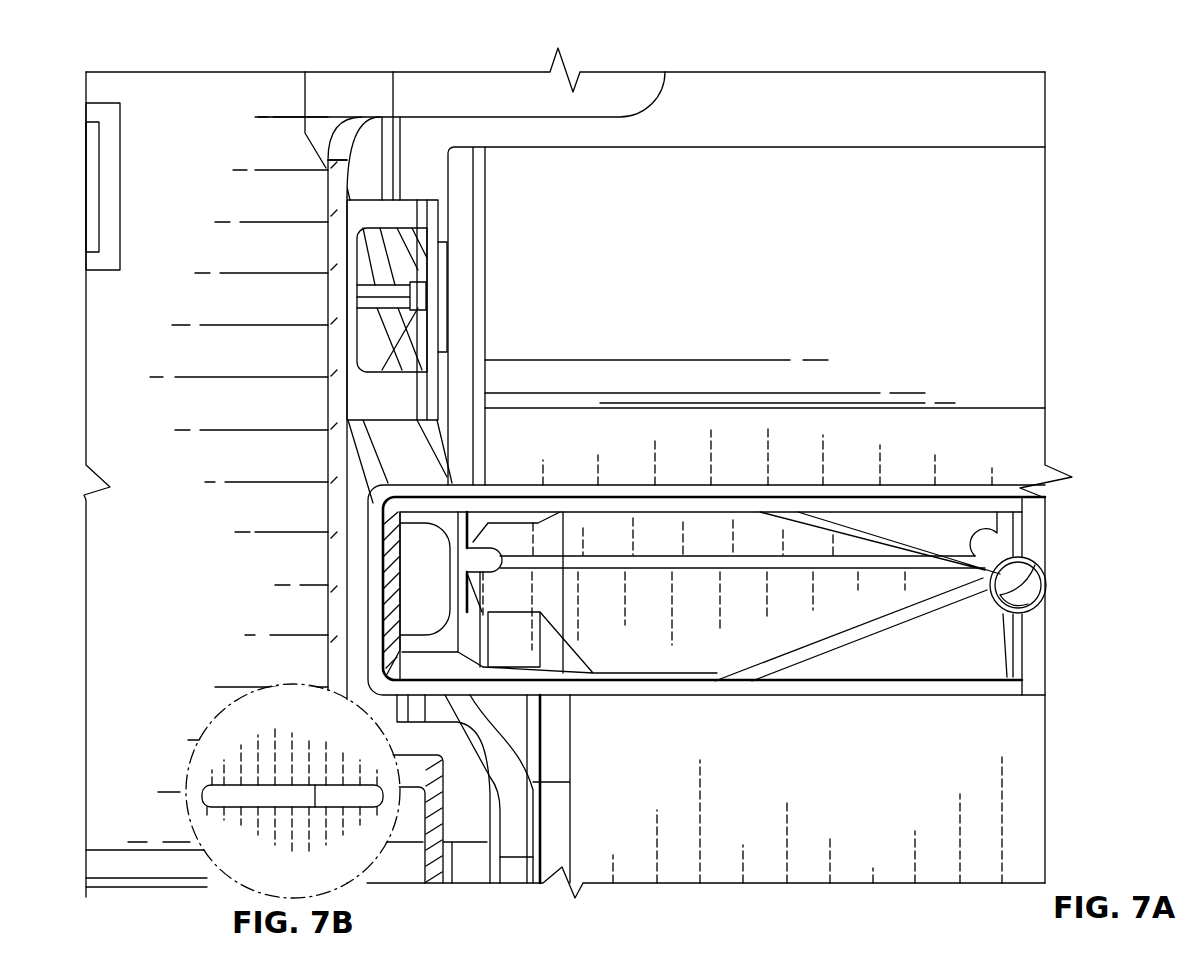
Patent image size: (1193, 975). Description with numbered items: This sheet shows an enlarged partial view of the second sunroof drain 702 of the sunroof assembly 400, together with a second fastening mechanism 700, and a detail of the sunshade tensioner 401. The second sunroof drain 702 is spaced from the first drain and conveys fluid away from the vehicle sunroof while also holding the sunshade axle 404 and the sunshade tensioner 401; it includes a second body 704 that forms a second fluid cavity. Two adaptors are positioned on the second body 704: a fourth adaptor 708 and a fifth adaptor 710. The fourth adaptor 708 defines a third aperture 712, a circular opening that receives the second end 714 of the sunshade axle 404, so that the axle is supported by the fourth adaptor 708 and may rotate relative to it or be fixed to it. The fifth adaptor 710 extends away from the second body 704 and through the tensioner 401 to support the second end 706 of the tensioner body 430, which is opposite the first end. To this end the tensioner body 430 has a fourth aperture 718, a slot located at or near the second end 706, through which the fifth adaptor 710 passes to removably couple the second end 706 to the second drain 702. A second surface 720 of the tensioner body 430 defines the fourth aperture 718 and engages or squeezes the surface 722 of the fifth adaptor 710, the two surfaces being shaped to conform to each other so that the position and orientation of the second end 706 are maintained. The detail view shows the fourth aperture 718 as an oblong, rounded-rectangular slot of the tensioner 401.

In FIG. 7A, the sunroof assembly 400 is at (83, 73).
In FIG. 7A, the sunshade tensioner 401 is at (876, 695).
In FIG. 7B, the sunshade tensioner 401 is at (293, 878).
In FIG. 7A, the sunshade axle 404 is at (417, 281).
In FIG. 7A, the tensioner body 430 is at (665, 666).
In FIG. 7A, the second fastening mechanism 700 is at (304, 524).
In FIG. 7A, the second sunroof drain 702 is at (356, 160).
In FIG. 7A, the second body 704 is at (113, 348).
In FIG. 7A, the second end 706 is at (392, 598).
In FIG. 7A, the fourth adaptor 708 is at (440, 200).
In FIG. 7A, the fifth adaptor 710 is at (415, 522).
In FIG. 7A, the third aperture 712 is at (419, 315).
In FIG. 7A, the second end 714 is at (408, 287).
In FIG. 7A, the fourth aperture 718 is at (408, 600).
In FIG. 7B, the fourth aperture 718 is at (256, 803).
In FIG. 7B, the second surface 720 is at (315, 800).
In FIG. 7A, the surface 722 is at (445, 561).